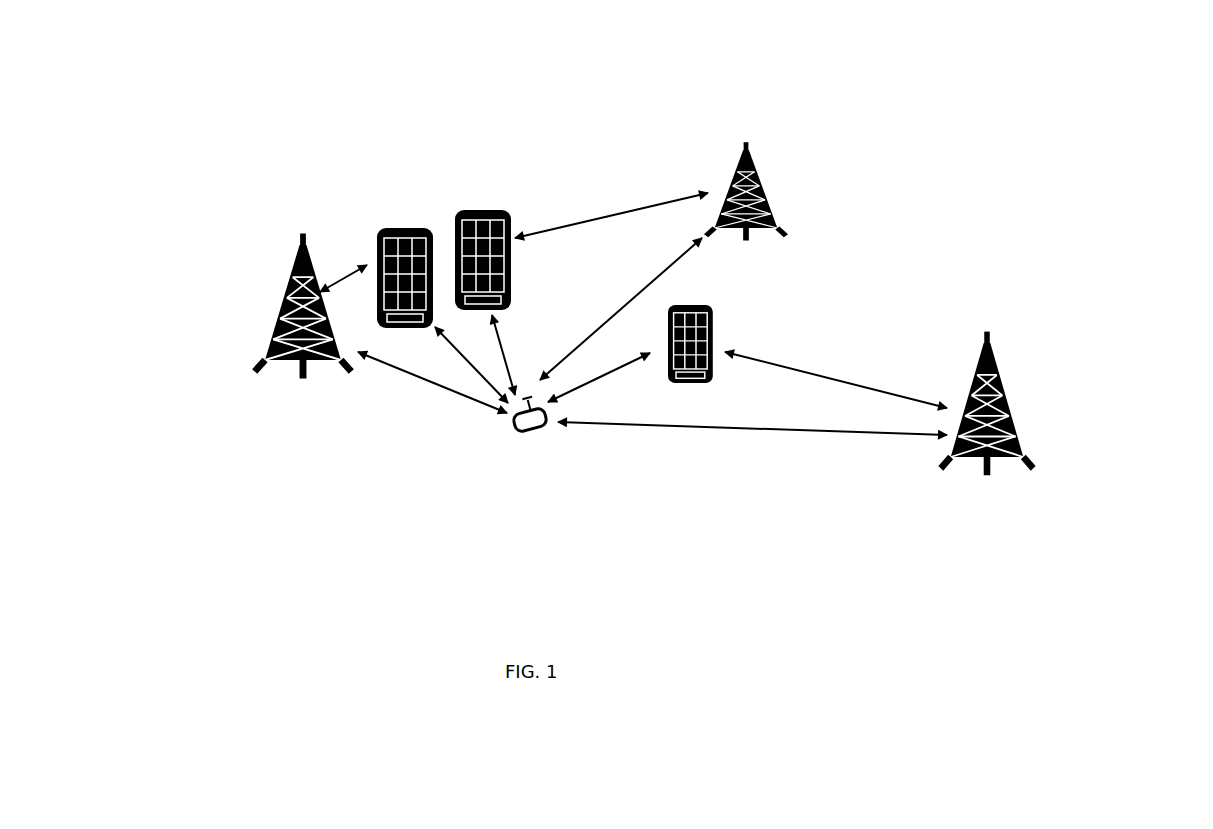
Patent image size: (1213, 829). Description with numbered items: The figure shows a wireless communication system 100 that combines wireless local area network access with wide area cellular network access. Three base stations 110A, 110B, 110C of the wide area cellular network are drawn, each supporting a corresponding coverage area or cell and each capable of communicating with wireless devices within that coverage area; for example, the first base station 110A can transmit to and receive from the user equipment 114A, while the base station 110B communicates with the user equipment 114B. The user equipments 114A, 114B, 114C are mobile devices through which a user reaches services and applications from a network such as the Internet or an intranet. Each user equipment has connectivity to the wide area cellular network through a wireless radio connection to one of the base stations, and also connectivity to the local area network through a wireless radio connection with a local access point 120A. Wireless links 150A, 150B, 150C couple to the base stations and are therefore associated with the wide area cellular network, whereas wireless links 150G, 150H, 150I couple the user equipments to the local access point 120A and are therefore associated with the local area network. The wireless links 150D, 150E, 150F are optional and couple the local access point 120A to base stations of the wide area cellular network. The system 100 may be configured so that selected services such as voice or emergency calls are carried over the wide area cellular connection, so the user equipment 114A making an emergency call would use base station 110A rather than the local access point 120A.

The system 100 is at (695, 251).
The first base station 110A is at (763, 208).
The base station 110B is at (292, 292).
The base station 110C is at (1008, 402).
The user equipment 114A is at (486, 211).
The user equipment 114B is at (390, 228).
The user equipment 114C is at (712, 380).
The local area access point 120A is at (541, 430).
The wireless link 150A is at (326, 286).
The wireless link 150B is at (574, 221).
The wireless link 150C is at (798, 370).
The wireless link 150D is at (750, 430).
The wireless link 150E is at (432, 388).
The wireless link 150F is at (604, 329).
The wireless link 150G is at (456, 366).
The wireless link 150H is at (501, 357).
The wireless link 150I is at (600, 380).